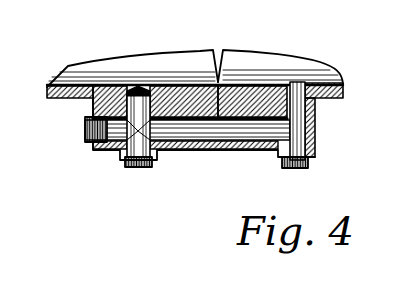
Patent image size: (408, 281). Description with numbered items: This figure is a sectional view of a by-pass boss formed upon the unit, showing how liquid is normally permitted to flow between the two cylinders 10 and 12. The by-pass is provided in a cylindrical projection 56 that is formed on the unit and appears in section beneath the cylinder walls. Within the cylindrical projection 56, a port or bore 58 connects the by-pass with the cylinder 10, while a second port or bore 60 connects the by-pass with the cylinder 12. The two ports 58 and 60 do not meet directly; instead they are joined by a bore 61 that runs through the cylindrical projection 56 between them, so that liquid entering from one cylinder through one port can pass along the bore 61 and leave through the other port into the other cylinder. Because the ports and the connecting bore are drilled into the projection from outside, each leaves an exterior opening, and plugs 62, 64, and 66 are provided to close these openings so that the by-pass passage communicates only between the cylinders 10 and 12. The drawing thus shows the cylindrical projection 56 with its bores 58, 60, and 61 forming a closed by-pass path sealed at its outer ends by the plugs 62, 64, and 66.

The cylinder 10 is at (170, 70).
The cylinder 12 is at (258, 73).
The cylindrical projection 56 is at (206, 151).
The port or bore 58 is at (138, 86).
The port or bore 60 is at (297, 104).
The bore 61 is at (245, 131).
The plug 62 is at (85, 135).
The plug 64 is at (130, 165).
The plug 66 is at (300, 163).